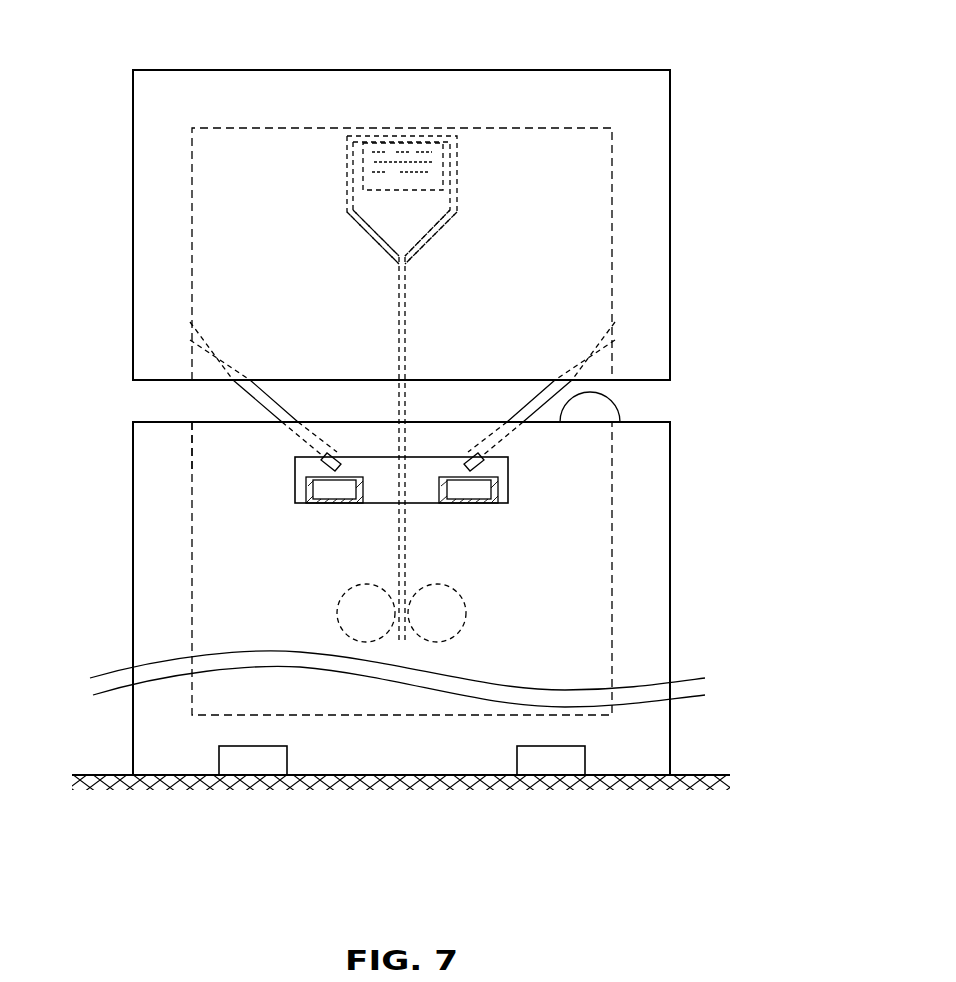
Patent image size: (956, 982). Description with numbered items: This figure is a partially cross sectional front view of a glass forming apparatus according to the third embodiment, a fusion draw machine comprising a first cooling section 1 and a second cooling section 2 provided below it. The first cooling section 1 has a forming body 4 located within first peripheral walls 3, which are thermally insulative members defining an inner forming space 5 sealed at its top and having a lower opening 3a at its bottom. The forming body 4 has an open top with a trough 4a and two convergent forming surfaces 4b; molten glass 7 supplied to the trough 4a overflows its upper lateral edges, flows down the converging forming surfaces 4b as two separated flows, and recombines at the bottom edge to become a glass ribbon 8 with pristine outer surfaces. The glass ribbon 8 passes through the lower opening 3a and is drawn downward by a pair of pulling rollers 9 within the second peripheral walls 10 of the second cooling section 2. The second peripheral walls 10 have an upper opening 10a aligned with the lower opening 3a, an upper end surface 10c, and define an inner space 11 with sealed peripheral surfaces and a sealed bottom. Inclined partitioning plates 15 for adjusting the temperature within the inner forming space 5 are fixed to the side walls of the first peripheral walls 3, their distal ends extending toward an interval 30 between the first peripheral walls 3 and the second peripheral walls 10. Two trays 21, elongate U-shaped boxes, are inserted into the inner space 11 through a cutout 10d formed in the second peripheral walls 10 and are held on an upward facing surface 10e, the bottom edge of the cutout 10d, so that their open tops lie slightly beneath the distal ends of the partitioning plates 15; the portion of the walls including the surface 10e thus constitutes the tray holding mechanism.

The first cooling section 1 is at (436, 326).
The second cooling section 2 is at (430, 557).
The first peripheral walls 3 is at (661, 195).
The lower opening 3a is at (604, 375).
The forming body 4 is at (402, 138).
The trough 4a is at (378, 143).
The convergent forming surfaces 4b is at (352, 226).
The inner forming space 5 is at (200, 162).
The molten glass 7 is at (420, 143).
The glass ribbon 8 is at (408, 268).
The pulling rollers 9 is at (338, 601).
The second peripheral walls 10 is at (138, 452).
The upper opening 10a is at (190, 450).
The upper end surface 10c is at (620, 422).
The cutout 10d is at (403, 454).
The upward facing surface 10e is at (392, 504).
The inner space 11 is at (200, 545).
The partitioning plates 15 is at (240, 375).
The trays 21 is at (313, 505).
The interval 30 is at (680, 404).